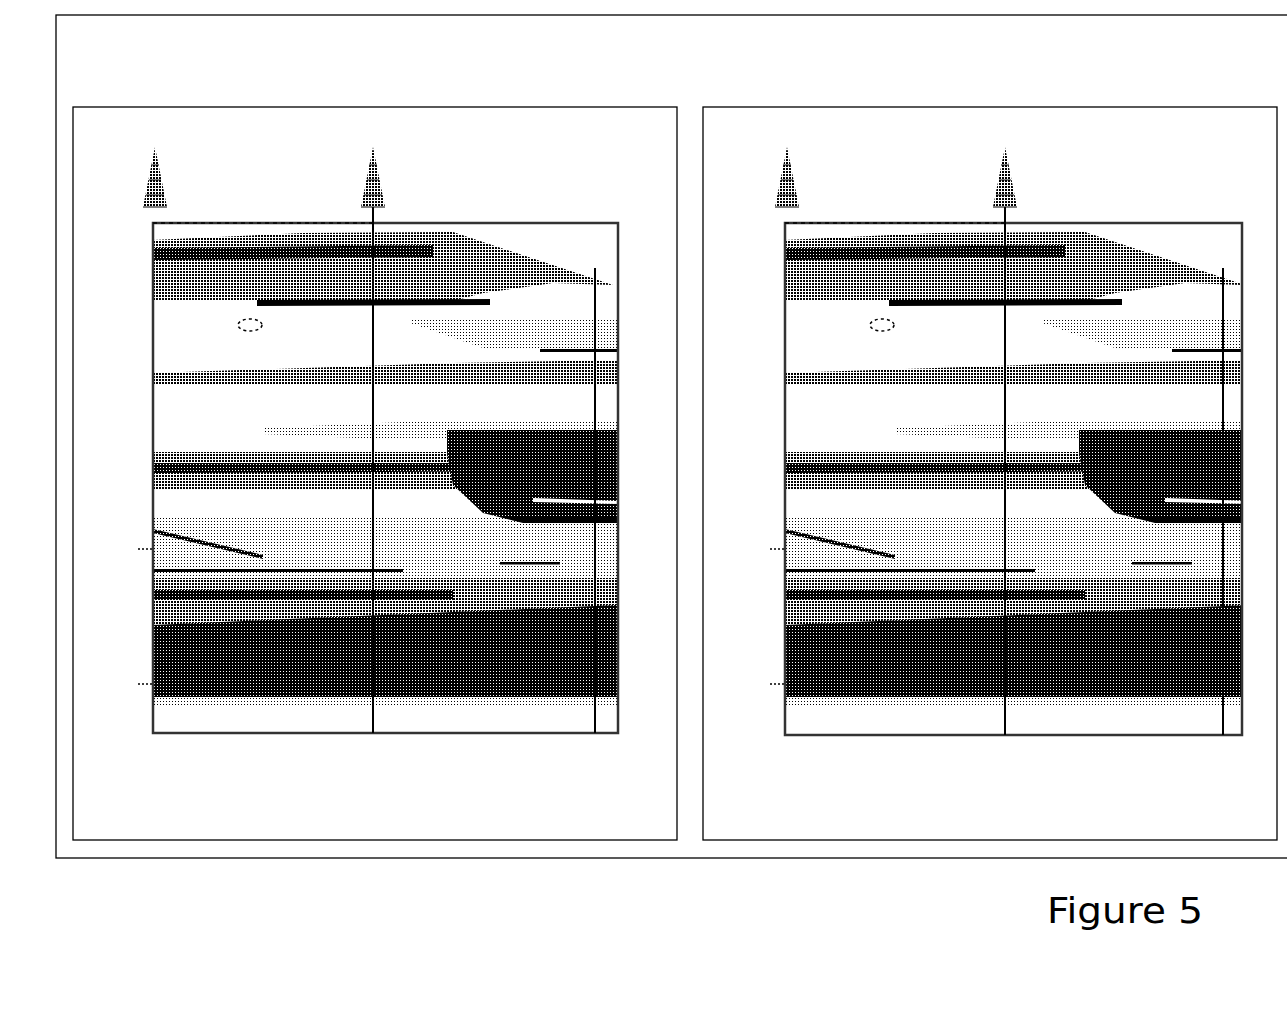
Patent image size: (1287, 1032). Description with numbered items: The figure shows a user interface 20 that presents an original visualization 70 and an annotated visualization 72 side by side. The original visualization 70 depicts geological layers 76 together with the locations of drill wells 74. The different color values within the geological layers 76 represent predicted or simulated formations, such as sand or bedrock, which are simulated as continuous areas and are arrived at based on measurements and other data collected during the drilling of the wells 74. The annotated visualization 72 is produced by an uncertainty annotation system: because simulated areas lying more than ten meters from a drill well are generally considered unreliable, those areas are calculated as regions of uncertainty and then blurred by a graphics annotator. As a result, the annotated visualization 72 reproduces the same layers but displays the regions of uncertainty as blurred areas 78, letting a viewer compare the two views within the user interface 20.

The user interface 20 is at (671, 436).
The original visualization 70 is at (375, 444).
The annotated visualization 72 is at (990, 473).
The drill wells 74 is at (352, 168).
The geological layers 76 is at (294, 718).
The blurred areas 78 is at (1097, 718).